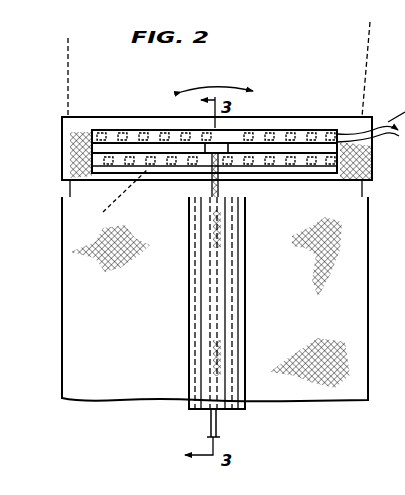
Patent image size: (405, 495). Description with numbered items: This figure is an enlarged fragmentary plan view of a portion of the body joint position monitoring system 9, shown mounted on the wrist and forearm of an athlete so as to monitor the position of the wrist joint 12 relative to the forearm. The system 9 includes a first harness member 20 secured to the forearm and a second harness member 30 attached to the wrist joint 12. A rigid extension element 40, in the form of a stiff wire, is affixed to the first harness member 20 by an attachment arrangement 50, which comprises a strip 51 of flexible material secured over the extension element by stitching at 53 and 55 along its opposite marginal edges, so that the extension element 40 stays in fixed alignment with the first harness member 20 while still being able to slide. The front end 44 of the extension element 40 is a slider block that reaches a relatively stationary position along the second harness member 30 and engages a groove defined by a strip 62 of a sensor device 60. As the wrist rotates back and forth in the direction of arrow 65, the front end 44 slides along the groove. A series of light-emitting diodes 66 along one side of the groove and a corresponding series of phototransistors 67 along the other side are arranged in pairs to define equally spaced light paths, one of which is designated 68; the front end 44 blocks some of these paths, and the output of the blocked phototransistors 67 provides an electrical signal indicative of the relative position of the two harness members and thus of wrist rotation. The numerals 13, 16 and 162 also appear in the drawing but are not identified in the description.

The body joint position monitoring system 9 is at (366, 97).
The wrist joint 12 is at (68, 65).
The top rail 13 is at (68, 38).
The side rail 16 is at (386, 228).
The side rail flange 162 is at (386, 283).
The first harness member 20 is at (62, 312).
The second harness member 30 is at (62, 120).
The rigid extension element 40 is at (222, 187).
The front end 44 is at (233, 128).
The attachment arrangement 50 is at (245, 258).
The strip of flexible material 51 is at (190, 299).
The stitching 53 is at (195, 312).
The stitching 55 is at (245, 318).
The sensor device 60 is at (70, 166).
The strip 62 is at (99, 128).
The arrow 65 is at (217, 84).
The light-emitting diodes 66 is at (128, 128).
The phototransistors 67 is at (115, 200).
The light path 68 is at (68, 143).